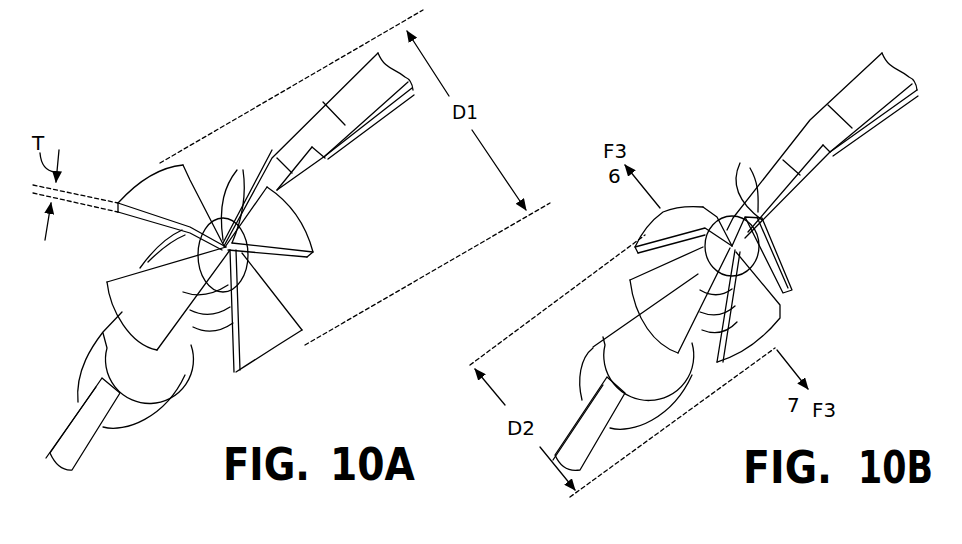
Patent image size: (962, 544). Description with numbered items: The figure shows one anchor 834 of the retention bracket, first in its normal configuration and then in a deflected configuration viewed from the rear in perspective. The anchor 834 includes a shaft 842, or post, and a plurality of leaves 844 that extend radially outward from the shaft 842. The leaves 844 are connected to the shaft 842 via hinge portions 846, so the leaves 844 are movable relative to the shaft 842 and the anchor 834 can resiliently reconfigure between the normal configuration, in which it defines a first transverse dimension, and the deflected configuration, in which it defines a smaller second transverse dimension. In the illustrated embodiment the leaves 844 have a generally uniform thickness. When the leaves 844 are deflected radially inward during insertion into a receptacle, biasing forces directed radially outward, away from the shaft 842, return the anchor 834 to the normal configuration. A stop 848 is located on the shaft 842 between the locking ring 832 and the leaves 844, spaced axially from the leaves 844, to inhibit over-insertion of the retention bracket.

In FIG. 10A, the locking ring 832 is at (291, 127).
In FIG. 10B, the locking ring 832 is at (792, 131).
In FIG. 10A, the anchor 834 is at (185, 101).
In FIG. 10B, the anchor 834 is at (664, 173).
In FIG. 10A, the shaft 842 is at (160, 370).
In FIG. 10B, the shaft 842 is at (669, 370).
In FIG. 10A, the leaves 844 is at (153, 185).
In FIG. 10B, the leaves 844 is at (680, 220).
In FIG. 10A, the hinge portions 846 is at (322, 278).
In FIG. 10B, the hinge portions 846 is at (590, 328).
In FIG. 10A, the stop 848 is at (216, 338).